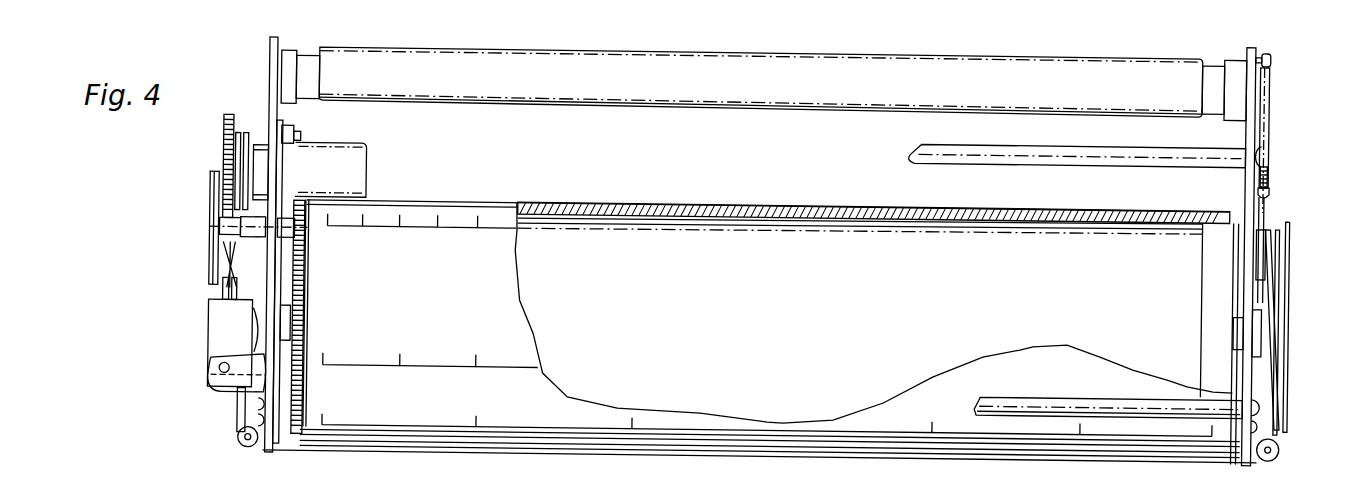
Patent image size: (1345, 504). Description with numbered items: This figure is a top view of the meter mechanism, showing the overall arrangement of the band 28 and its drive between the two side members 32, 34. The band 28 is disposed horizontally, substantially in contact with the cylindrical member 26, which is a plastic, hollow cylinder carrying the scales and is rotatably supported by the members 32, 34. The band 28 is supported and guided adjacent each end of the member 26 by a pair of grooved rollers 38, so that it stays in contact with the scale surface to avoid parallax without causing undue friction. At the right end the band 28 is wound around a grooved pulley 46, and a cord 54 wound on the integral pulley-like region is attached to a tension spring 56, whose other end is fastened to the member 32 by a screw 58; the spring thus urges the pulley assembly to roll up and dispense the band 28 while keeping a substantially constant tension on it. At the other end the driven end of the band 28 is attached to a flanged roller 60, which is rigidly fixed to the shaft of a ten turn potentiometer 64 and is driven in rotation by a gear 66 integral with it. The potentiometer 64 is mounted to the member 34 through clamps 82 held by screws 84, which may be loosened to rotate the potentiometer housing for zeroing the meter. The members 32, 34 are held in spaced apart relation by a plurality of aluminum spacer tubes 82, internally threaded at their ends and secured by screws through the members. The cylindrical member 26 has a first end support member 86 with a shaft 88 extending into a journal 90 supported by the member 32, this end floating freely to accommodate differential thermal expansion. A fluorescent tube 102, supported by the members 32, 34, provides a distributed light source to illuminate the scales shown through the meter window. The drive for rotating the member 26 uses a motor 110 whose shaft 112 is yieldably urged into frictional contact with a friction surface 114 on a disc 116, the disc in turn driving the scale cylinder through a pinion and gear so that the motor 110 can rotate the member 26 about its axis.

The cylindrical member 26 is at (621, 437).
The band 28 is at (238, 410).
The member 32 is at (1254, 97).
The member 34 is at (277, 102).
The grooved rollers 38 is at (243, 446).
The grooved pulley 46 is at (1287, 232).
The cord 54 is at (1263, 214).
The tension spring 56 is at (1268, 117).
The screw 58 is at (1271, 60).
The flanged roller 60 is at (256, 133).
The ten turn potentiometer 64 is at (354, 176).
The gear 66 is at (224, 118).
The spacer tubes 82 is at (282, 125).
The screws 84 is at (298, 136).
The first end support member 86 is at (1228, 261).
The shaft 88 is at (1240, 332).
The journal 90 is at (1258, 345).
The fluorescent tube 102 is at (676, 67).
The motor 110 is at (217, 327).
The shaft 112 is at (222, 292).
The friction surface 114 is at (217, 198).
The disc 116 is at (209, 257).